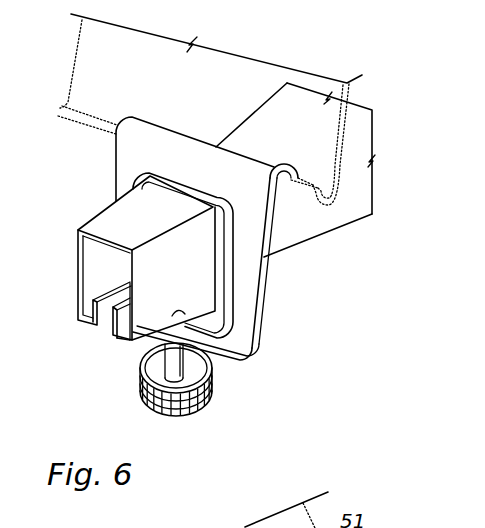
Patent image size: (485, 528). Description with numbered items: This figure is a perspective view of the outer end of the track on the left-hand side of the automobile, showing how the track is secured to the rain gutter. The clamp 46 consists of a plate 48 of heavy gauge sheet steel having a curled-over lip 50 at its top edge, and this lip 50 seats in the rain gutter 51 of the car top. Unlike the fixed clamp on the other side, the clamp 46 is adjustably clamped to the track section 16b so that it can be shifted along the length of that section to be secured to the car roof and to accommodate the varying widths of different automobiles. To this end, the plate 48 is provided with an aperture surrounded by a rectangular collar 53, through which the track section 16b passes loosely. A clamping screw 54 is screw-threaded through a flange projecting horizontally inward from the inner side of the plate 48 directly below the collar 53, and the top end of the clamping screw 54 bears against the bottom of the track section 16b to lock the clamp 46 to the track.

The track section 16b is at (350, 186).
The clamp 46 is at (192, 135).
The plate 48 is at (136, 163).
The curled-over lip 50 is at (290, 188).
The rain gutter 51 is at (327, 200).
The rectangular collar 53 is at (224, 294).
The clamping screw 54 is at (172, 363).